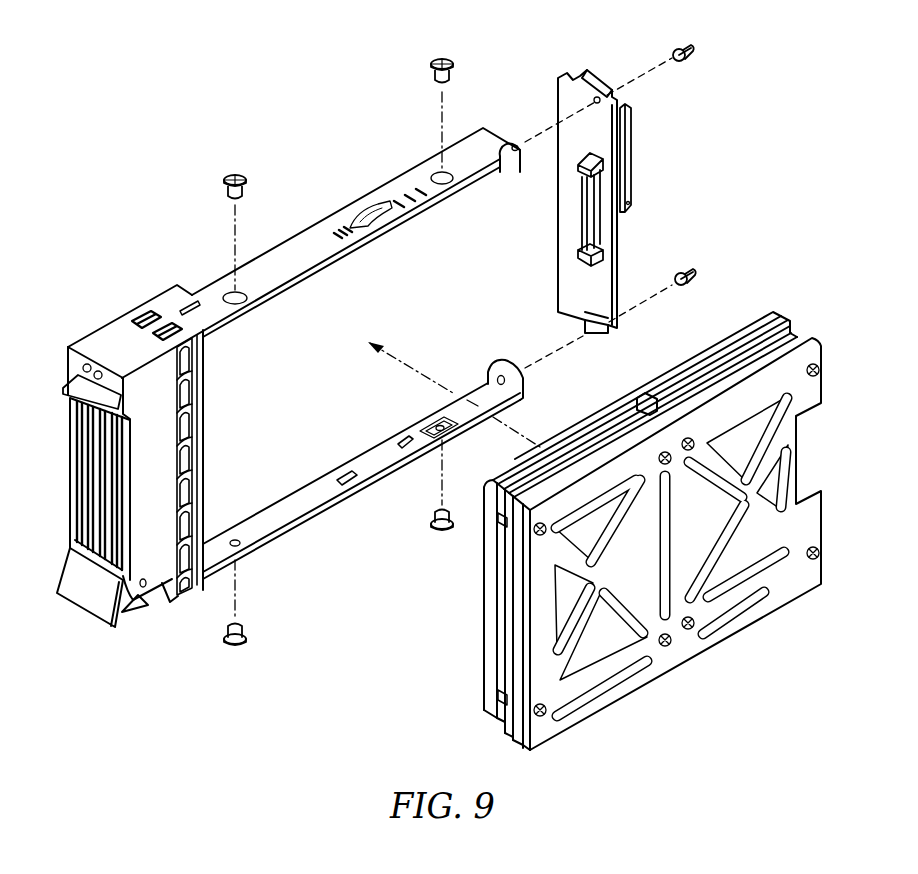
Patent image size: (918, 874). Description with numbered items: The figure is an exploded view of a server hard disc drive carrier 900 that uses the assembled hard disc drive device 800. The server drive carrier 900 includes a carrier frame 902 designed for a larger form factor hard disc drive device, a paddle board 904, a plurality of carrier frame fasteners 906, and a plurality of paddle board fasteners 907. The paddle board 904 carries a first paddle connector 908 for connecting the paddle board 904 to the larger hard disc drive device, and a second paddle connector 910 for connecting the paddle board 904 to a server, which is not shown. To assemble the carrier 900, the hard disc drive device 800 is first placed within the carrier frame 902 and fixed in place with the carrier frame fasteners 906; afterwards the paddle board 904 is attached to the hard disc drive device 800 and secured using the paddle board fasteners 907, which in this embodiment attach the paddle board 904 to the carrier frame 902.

The server drive carrier 900 is at (241, 757).
The carrier frame 902 is at (335, 179).
The paddle board 904 is at (603, 61).
The carrier frame fasteners 906 is at (423, 79).
The paddle board fasteners 907 is at (705, 41).
The first paddle connector 908 is at (555, 227).
The second paddle connector 910 is at (645, 154).
The hard disc drive device 800 is at (684, 700).